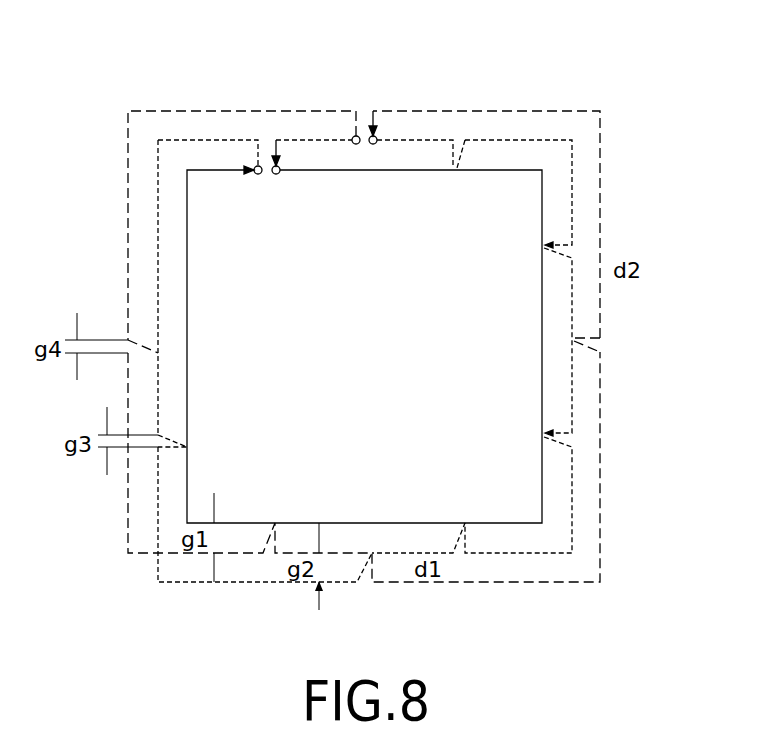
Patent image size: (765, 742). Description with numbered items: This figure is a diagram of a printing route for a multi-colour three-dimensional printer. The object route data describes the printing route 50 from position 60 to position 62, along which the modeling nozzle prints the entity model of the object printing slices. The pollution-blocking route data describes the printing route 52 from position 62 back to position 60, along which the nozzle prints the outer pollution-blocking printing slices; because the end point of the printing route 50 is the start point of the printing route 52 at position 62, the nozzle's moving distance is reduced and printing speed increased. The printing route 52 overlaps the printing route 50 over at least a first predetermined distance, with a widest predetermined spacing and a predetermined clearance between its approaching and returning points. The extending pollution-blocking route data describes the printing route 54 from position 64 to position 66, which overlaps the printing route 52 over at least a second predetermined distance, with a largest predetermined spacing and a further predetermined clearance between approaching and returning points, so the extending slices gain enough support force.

The printing route 50 is at (487, 170).
The printing route 52 is at (207, 138).
The printing route 54 is at (301, 110).
The position 60 is at (277, 175).
The position 62 is at (257, 175).
The position 64 is at (355, 145).
The position 66 is at (374, 145).